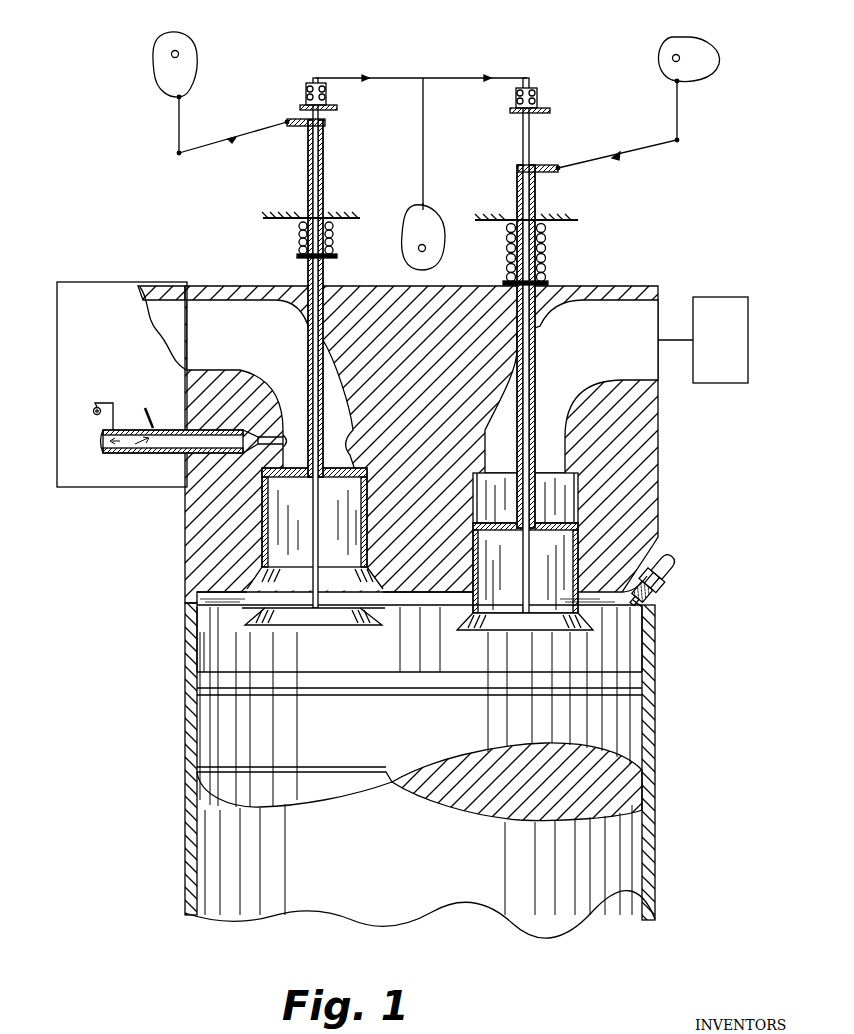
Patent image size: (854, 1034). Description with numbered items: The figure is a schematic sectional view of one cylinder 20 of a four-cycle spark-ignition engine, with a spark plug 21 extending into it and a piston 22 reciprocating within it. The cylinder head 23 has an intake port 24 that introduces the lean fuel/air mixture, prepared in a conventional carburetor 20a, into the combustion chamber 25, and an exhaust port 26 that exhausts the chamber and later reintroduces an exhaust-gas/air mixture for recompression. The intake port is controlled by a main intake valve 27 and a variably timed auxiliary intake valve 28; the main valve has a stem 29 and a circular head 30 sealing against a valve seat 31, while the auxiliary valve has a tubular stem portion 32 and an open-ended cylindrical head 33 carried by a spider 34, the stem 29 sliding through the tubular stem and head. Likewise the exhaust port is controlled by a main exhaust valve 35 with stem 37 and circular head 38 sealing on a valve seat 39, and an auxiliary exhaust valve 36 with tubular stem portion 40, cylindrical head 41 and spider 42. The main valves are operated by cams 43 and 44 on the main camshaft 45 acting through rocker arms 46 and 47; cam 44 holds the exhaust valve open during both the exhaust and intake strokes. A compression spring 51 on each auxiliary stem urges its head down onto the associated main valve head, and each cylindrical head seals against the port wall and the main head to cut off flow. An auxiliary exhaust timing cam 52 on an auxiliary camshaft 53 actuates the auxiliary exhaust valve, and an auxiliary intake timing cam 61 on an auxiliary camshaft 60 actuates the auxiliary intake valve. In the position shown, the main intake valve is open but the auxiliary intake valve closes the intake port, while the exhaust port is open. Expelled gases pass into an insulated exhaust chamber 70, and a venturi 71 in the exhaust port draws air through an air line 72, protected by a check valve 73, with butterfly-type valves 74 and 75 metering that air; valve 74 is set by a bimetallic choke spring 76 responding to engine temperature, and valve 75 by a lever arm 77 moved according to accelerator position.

The cylinder 20 is at (667, 748).
The carburetor 20a is at (705, 341).
The spark plug 21 is at (670, 566).
The piston 22 is at (305, 800).
The cylinder head 23 is at (659, 425).
The intake port 24 is at (586, 356).
The combustion chamber 25 is at (390, 666).
The exhaust port 26 is at (211, 336).
The main intake valve 27 is at (590, 640).
The auxiliary intake valve 28 is at (585, 578).
The stem 29 is at (519, 596).
The circular head 30 is at (597, 627).
The valve seat 31 is at (600, 586).
The tubular stem portion 32 is at (573, 284).
The cylindrical head 33 is at (563, 540).
The spider 34 is at (560, 522).
The main exhaust valve 35 is at (306, 627).
The auxiliary exhaust valve 36 is at (258, 570).
The stem 37 is at (318, 603).
The circular head 38 is at (265, 625).
The valve seat 39 is at (240, 590).
The tubular stem portion 40 is at (306, 285).
The cylindrical head 41 is at (278, 533).
The spider 42 is at (262, 470).
The cam 43 is at (437, 207).
The cam 44 is at (410, 207).
The main camshaft 45 is at (418, 249).
The rocker arm 46 is at (455, 78).
The rocker arm 47 is at (387, 78).
The compression spring 51 is at (300, 237).
The auxiliary exhaust timing cam 52 is at (164, 79).
The auxiliary camshaft 53 is at (184, 52).
The auxiliary camshaft 60 is at (673, 61).
The auxiliary intake timing cam 61 is at (722, 58).
The insulated exhaust chamber 70 is at (94, 346).
The venturi 71 is at (283, 432).
The air line 72 is at (130, 455).
The check valve 73 is at (247, 430).
The butterfly-type valve 74 is at (118, 453).
The butterfly-type valve 75 is at (148, 453).
The bimetallic choke spring 76 is at (93, 411).
The lever arm 77 is at (152, 400).